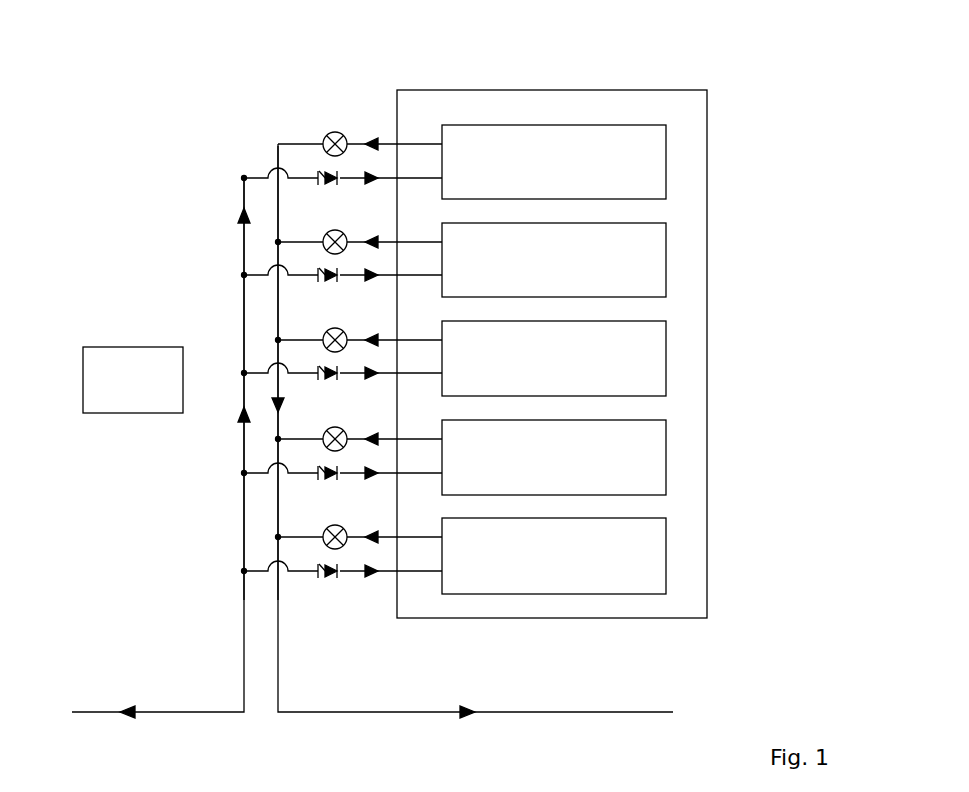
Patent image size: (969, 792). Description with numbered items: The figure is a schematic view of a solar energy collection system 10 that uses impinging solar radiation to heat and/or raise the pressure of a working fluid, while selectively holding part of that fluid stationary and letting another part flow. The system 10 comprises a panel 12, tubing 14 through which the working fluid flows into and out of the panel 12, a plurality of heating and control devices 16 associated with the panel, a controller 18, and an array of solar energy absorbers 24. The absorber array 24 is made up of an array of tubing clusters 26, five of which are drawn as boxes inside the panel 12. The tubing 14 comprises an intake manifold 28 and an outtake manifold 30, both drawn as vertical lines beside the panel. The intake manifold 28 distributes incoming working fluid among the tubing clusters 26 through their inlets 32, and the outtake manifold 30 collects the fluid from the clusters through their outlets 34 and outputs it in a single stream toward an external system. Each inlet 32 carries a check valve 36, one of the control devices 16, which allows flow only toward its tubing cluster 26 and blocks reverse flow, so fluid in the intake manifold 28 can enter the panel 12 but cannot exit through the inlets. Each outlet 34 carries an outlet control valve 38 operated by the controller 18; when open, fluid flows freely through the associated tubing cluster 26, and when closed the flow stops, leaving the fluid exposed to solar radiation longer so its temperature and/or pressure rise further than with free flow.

The solar energy collection system 10 is at (172, 158).
The panel 12 is at (707, 322).
The tubing 14 is at (218, 620).
The heating and control devices 16 is at (337, 95).
The controller 18 is at (115, 397).
The array of solar energy absorbers 24 is at (593, 68).
The tubing cluster 26 is at (537, 172).
The intake manifold 28 is at (243, 258).
The outtake manifold 30 is at (278, 311).
The inlet 32 is at (356, 182).
The outlet 34 is at (358, 143).
The check valve 36 is at (323, 184).
The outlet control valve 38 is at (329, 133).